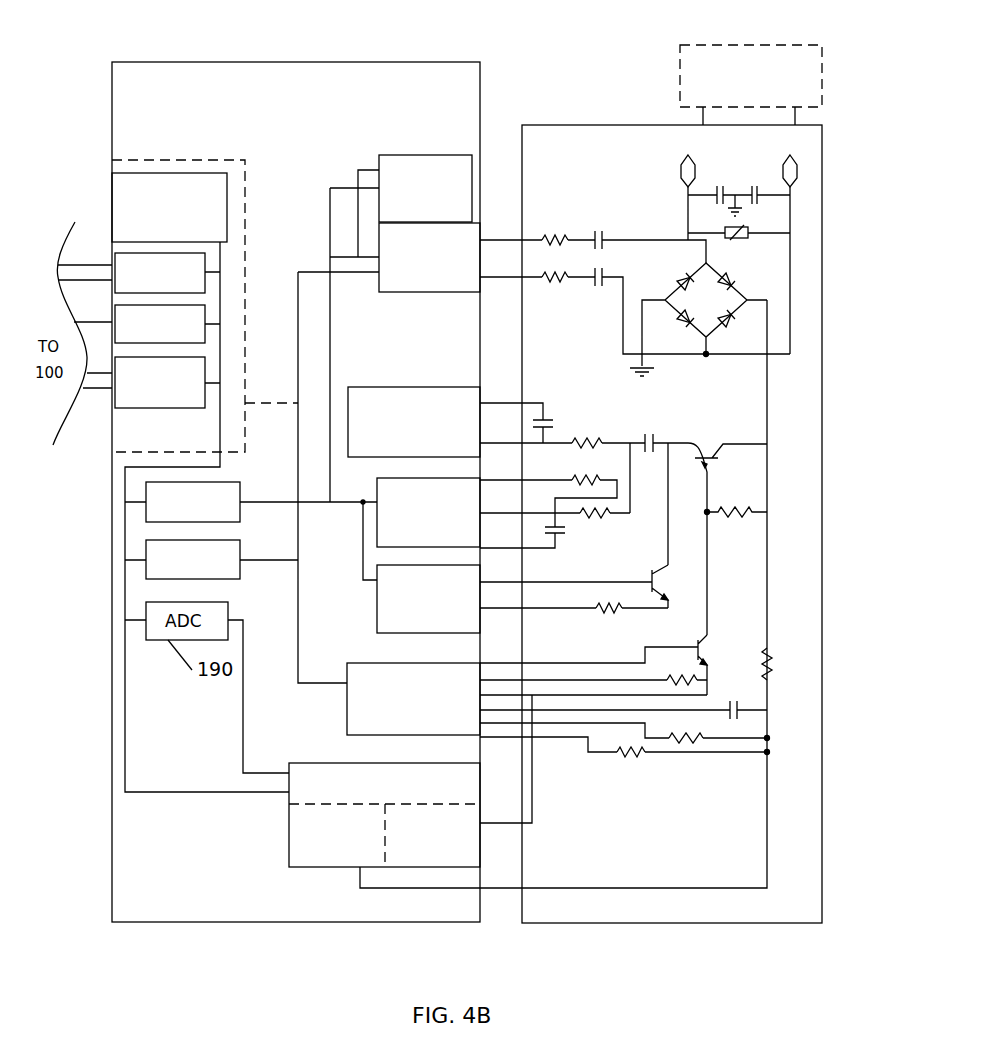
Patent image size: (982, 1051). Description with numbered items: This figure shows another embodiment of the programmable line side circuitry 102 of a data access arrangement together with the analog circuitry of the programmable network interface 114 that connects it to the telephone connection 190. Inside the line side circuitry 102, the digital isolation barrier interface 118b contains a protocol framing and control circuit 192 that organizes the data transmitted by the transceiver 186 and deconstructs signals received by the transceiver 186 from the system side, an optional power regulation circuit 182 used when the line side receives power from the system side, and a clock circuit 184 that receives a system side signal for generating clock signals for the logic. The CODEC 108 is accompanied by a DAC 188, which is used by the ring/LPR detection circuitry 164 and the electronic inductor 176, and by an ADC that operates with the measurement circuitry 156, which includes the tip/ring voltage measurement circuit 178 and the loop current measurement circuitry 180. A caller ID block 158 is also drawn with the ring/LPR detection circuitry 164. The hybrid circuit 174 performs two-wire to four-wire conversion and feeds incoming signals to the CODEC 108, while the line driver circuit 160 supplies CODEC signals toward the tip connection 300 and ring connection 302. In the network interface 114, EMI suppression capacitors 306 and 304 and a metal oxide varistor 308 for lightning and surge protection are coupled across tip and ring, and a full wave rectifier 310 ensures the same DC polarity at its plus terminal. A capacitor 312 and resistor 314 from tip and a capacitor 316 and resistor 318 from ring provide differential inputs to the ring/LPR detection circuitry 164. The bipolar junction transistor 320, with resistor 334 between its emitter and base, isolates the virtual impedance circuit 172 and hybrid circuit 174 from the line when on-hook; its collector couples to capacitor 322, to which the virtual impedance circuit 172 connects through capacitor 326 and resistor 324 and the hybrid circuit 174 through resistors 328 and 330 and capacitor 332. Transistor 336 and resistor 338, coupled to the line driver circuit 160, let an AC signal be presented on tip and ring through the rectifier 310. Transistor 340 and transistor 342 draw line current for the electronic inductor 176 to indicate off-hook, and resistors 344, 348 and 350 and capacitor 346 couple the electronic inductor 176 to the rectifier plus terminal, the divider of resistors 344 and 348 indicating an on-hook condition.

The programmable line side circuitry 102 is at (325, 62).
The telephone connection 190 is at (765, 45).
The digital isolation barrier interface 118b is at (200, 158).
The protocol framing and control circuit 192 is at (228, 195).
The power regulation circuit 182 is at (208, 267).
The clock circuit 184 is at (205, 310).
The transceiver 186 is at (133, 410).
The CODEC 108 is at (225, 480).
The DAC 188 is at (217, 540).
The caller ID 158 is at (430, 153).
The ring/LPR detection circuitry 164 is at (440, 293).
The virtual impedance circuit 172 is at (402, 385).
The hybrid circuit 174 is at (375, 517).
The line driver circuit 160 is at (377, 602).
The electronic inductor 176 is at (377, 662).
The measurement circuitry 156 is at (352, 762).
The tip/ring voltage measurement circuit 178 is at (313, 868).
The loop current measurement circuitry 180 is at (435, 870).
The programmable network interface 114 is at (825, 283).
The tip connection 300 is at (682, 165).
The ring connection 302 is at (797, 165).
The EMI suppression capacitor 304 is at (763, 200).
The EMI suppression capacitor 306 is at (715, 200).
The metal oxide varistor 308 is at (728, 243).
The full wave rectifier 310 is at (710, 323).
The capacitor 312 is at (591, 233).
The resistor 314 is at (553, 233).
The capacitor 316 is at (597, 290).
The resistor 318 is at (553, 285).
The bipolar junction transistor 320 is at (706, 440).
The capacitor 322 is at (652, 425).
The resistor 324 is at (590, 432).
The capacitor 326 is at (555, 413).
The resistor 328 is at (595, 518).
The resistor 330 is at (590, 474).
The capacitor 332 is at (565, 537).
The resistor 334 is at (722, 520).
The transistor 336 is at (668, 585).
The resistor 338 is at (605, 615).
The transistor 340 is at (703, 650).
The transistor 342 is at (690, 676).
The resistor 344 is at (773, 652).
The capacitor 346 is at (737, 718).
The resistor 348 is at (690, 747).
The resistor 350 is at (632, 758).